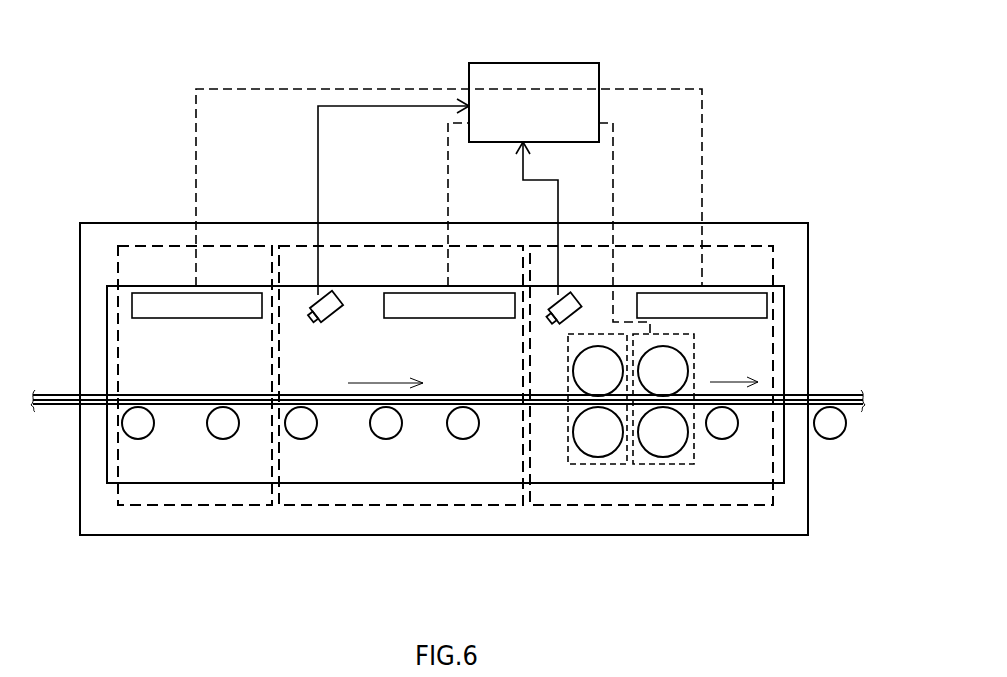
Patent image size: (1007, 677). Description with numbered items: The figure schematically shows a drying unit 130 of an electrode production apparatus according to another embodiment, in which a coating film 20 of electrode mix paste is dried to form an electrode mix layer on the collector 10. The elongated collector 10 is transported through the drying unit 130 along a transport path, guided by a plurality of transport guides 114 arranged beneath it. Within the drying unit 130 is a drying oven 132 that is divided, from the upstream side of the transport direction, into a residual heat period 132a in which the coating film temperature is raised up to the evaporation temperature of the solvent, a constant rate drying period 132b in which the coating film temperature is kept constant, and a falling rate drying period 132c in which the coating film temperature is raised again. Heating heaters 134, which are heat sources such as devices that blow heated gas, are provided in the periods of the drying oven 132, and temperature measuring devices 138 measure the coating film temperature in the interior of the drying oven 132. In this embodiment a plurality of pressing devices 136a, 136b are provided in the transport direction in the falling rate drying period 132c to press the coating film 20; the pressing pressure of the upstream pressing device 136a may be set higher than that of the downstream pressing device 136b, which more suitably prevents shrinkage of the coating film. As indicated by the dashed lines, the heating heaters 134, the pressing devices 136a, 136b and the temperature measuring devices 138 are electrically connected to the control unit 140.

The collector 10 is at (57, 407).
The coating film 20 is at (830, 393).
The transport guides 114 is at (220, 440).
The drying unit 130 is at (723, 216).
The drying oven 132 is at (748, 285).
The residual heat period 132a is at (187, 505).
The constant rate drying period 132b is at (385, 505).
The falling rate drying period 132c is at (543, 505).
The heating heaters 134 is at (210, 318).
The pressing device 136a is at (603, 464).
The pressing device 136b is at (665, 464).
The temperature measuring devices 138 is at (342, 312).
The control unit 140 is at (590, 63).